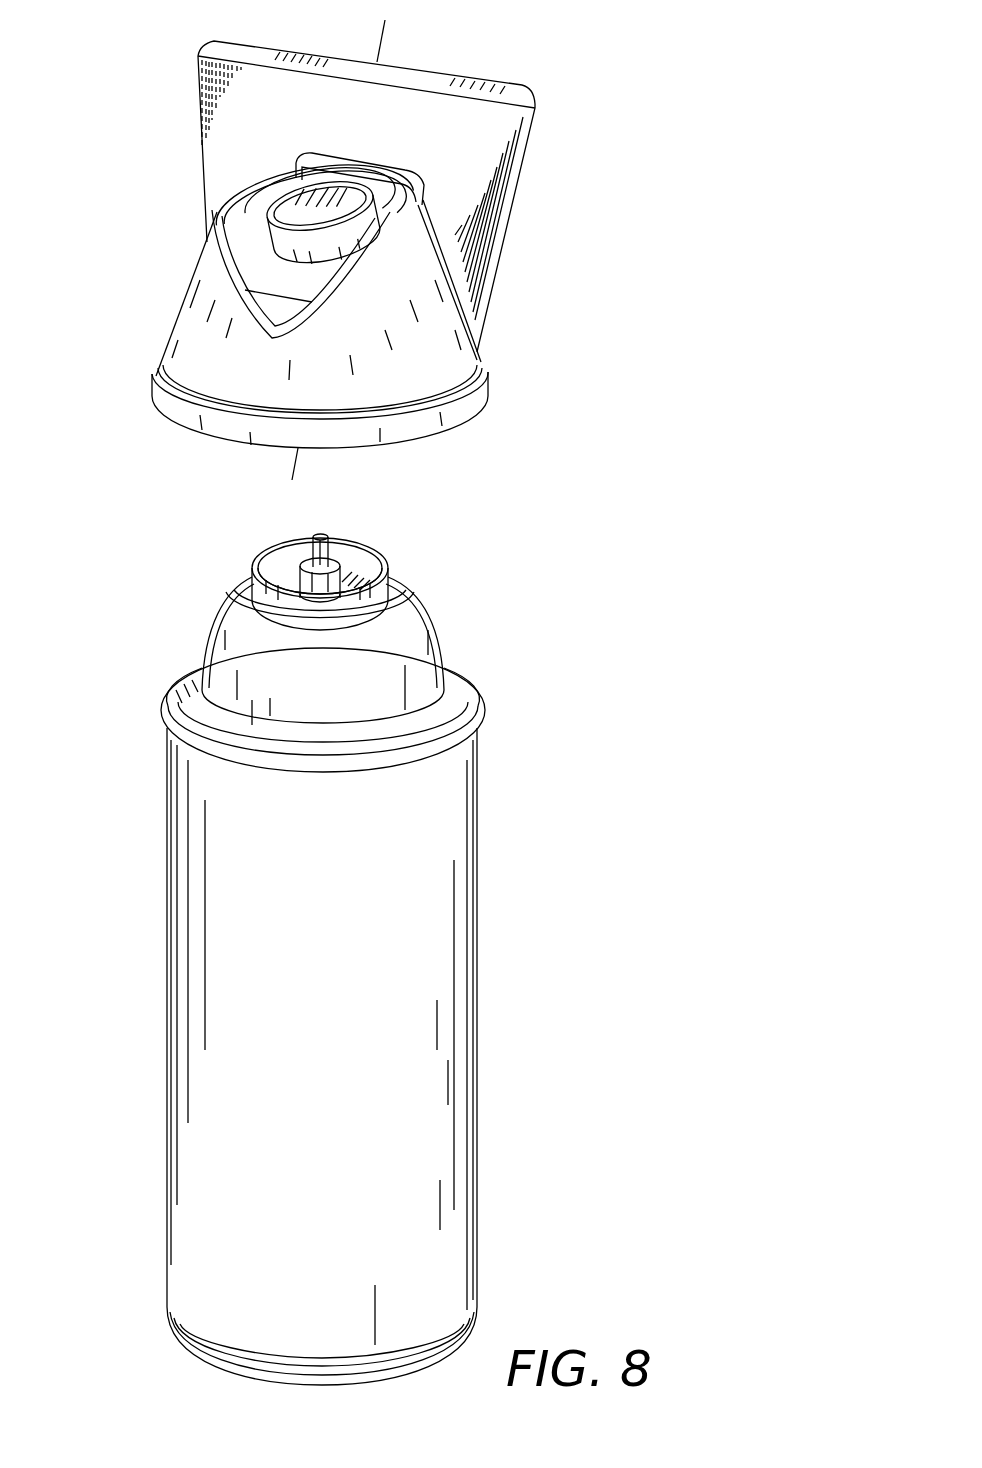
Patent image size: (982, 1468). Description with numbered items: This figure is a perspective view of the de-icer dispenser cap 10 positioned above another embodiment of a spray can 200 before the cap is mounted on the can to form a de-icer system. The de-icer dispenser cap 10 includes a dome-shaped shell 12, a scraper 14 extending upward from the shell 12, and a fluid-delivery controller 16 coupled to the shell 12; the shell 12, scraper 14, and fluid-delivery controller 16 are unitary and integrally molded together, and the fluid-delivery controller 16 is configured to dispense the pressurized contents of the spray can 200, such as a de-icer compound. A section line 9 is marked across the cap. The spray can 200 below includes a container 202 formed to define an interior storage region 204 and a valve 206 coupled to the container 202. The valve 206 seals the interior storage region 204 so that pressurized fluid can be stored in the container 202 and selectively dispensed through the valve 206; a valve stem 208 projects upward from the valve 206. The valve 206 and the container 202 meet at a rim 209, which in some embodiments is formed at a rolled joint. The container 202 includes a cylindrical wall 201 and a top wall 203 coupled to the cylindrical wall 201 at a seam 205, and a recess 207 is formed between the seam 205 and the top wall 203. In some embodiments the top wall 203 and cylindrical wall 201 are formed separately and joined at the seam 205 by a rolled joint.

The section line 9- 9 is at (407, 40).
The de-icer dispenser cap 10 is at (537, 183).
The dome-shaped shell 12 is at (463, 402).
The scraper 14 is at (537, 100).
The fluid-delivery controller 16 is at (268, 228).
The spray can 200 is at (489, 773).
The cylindrical wall 201 is at (478, 1010).
The container 202 is at (478, 951).
The top wall 203 is at (413, 618).
The interior storage region 204 is at (379, 1138).
The seam 205 is at (486, 678).
The valve 206 is at (364, 566).
The recess 207 is at (179, 683).
The valve stem 208 is at (314, 534).
The rim 209 is at (254, 559).